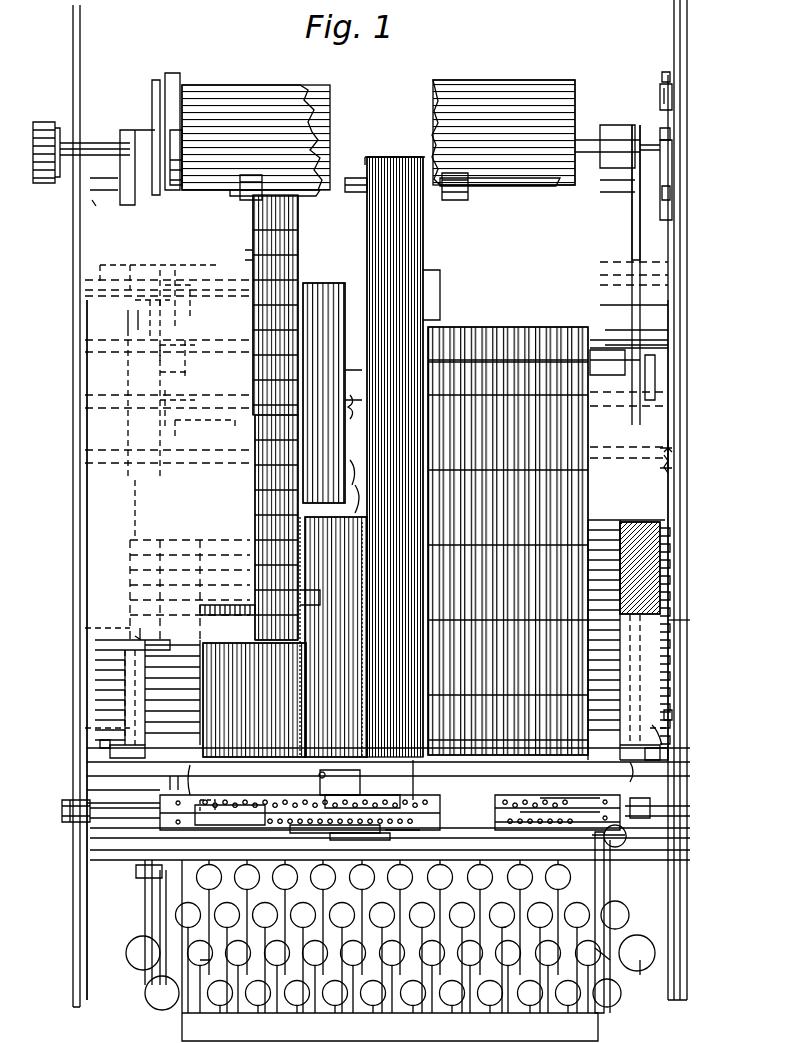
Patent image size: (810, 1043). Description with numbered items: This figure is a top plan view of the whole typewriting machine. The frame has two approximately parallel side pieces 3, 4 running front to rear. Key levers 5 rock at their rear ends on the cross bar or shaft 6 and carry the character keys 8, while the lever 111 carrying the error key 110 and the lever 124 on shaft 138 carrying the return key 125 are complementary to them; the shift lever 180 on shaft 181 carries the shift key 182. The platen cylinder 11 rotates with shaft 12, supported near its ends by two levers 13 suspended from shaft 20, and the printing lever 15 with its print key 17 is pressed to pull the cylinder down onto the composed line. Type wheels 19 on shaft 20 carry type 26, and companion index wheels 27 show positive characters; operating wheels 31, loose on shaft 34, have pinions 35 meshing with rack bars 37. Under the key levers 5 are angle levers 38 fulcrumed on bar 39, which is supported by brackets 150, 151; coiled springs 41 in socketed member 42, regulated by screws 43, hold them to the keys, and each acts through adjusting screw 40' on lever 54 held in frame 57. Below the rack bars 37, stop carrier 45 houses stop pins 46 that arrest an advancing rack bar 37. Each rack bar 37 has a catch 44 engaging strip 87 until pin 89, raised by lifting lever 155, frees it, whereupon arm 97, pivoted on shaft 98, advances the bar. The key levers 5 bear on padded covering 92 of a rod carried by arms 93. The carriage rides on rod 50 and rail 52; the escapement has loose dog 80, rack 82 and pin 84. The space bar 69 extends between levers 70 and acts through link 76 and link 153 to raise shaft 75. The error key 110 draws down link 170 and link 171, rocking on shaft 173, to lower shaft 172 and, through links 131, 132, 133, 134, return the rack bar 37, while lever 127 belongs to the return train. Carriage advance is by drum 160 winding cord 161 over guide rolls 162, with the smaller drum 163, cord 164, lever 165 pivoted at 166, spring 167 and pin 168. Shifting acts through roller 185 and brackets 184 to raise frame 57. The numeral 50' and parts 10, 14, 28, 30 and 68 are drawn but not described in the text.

The side piece 3 is at (72, 548).
The side piece 4 is at (690, 546).
The key lever 5 is at (584, 450).
The cross bar or shaft 6 is at (84, 345).
The key 8 is at (208, 1000).
The ribbon vibrator 10 is at (216, 168).
The cylinder or roll 11 is at (575, 118).
The shaft 12 is at (100, 143).
The lever 13 is at (630, 234).
The bracket 14 is at (660, 380).
The printing member or lever 15 is at (132, 914).
The key 17 is at (128, 940).
The type wheel or disk 19 is at (298, 212).
The shaft or spindle 20 is at (696, 264).
The type 26 is at (246, 328).
The index wheel 27 is at (254, 500).
The side frame 28 is at (78, 490).
The rack 30 is at (227, 618).
The operating or actuating wheel 31 is at (344, 282).
The shaft 34 is at (352, 414).
The pinion 35 is at (355, 383).
The rack bar 37 is at (432, 296).
The angle lever 38 is at (614, 522).
The bar or shaft 39 is at (607, 518).
The adjusting screw 40' is at (176, 698).
The coiled spring 41 is at (640, 687).
The socketed or spring-carrying member 42 is at (390, 757).
The screw 43 is at (100, 742).
The catch 44 is at (414, 783).
The stop carrier 45 is at (354, 472).
The stop pin 46 is at (354, 498).
The rod or bar 50 is at (385, 833).
The shaft bearing 50' is at (385, 805).
The rail 52 is at (86, 452).
The lever 54 is at (274, 639).
The frame 57 is at (134, 580).
The platen knob 68 is at (44, 185).
The space bar 69 is at (585, 1032).
The lever or side bar 70 is at (184, 187).
The shaft 75 is at (210, 822).
The link 76 is at (191, 780).
The loose dog 80 is at (358, 792).
The rack 82 is at (392, 817).
The pin 84 is at (378, 831).
The strip 87 is at (176, 783).
The pin 89 is at (311, 786).
The padded covering 92 is at (86, 804).
The arm 93 is at (98, 780).
The arm or lever 97 is at (366, 240).
The shaft 98 is at (361, 195).
The key 110 is at (638, 968).
The lever 111 is at (161, 642).
The lever 124 is at (638, 896).
The key 125 is at (148, 986).
The lever 127 is at (86, 400).
The link 131 is at (187, 410).
The link 132 is at (186, 351).
The link 133 is at (188, 300).
The link 134 is at (165, 262).
The shaft 138 is at (84, 629).
The bracket 150 is at (668, 744).
The bracket 151 is at (642, 520).
The link 153 is at (202, 815).
The lifting lever 155 is at (339, 782).
The drum or roller 160 is at (676, 165).
The connector or cord 161 is at (680, 312).
The guide roll 162 is at (644, 772).
The smaller drum 163 is at (654, 198).
The connector or cord 164 is at (672, 132).
The lever 165 is at (662, 100).
The pivot 166 is at (675, 94).
The coiled pull spring 167 is at (660, 74).
The pin 168 is at (662, 470).
The link 170 is at (186, 362).
The link 171 is at (150, 320).
The shaft 172 is at (205, 437).
The shaft 173 is at (84, 296).
The lever 180 is at (373, 818).
The shaft 181 is at (86, 729).
The key 182 is at (618, 998).
The bracket 184 is at (134, 626).
The roller 185 is at (119, 632).